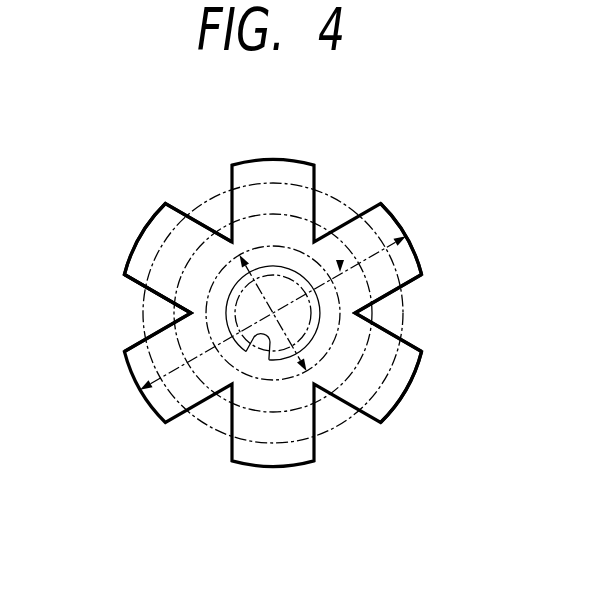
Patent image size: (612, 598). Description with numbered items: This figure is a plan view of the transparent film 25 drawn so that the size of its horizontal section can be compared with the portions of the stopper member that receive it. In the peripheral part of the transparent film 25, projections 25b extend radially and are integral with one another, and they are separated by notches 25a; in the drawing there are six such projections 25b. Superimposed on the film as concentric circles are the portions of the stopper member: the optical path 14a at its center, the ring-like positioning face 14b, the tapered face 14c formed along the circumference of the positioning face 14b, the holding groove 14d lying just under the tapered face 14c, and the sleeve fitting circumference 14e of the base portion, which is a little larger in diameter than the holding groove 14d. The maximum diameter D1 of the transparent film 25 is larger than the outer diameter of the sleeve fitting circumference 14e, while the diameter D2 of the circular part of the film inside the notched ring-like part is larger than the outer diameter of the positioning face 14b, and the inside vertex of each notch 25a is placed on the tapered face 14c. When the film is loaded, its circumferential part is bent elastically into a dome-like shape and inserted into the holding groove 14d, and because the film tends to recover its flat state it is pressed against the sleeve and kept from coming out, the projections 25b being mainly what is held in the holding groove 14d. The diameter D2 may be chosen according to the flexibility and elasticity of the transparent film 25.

The transparent film 25 is at (286, 147).
The notches 25a is at (410, 326).
The projections 25b is at (386, 221).
The optical path 14a is at (247, 346).
The positioning face 14b is at (380, 308).
The tapered face 14c is at (243, 230).
The holding groove 14d is at (146, 314).
The sleeve fitting circumference 14e is at (141, 386).
The maximum diameter of the transparent film D1 is at (340, 261).
The diameter of the circular part of the film D2 is at (281, 332).